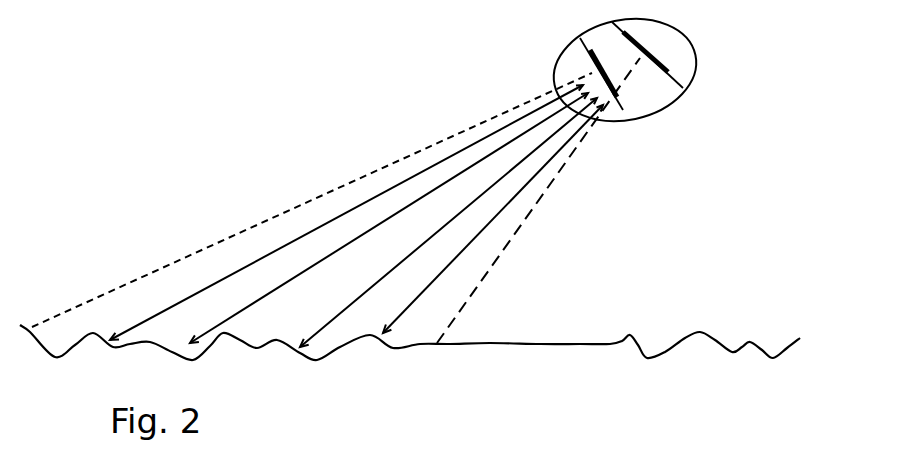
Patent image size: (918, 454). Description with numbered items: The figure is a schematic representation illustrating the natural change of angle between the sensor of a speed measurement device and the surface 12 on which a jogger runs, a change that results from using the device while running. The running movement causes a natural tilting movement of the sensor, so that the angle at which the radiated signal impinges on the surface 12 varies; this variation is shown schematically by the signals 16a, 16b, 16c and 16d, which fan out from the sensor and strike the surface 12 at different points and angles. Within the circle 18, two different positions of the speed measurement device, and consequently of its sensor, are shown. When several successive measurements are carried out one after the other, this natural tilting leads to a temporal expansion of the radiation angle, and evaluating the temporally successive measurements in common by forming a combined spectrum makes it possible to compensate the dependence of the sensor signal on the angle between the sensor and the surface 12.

The surface 12 is at (485, 344).
The signal 16a is at (213, 279).
The signal 16b is at (283, 284).
The signal 16c is at (382, 277).
The signal 16d is at (477, 236).
The circle 18 is at (695, 73).